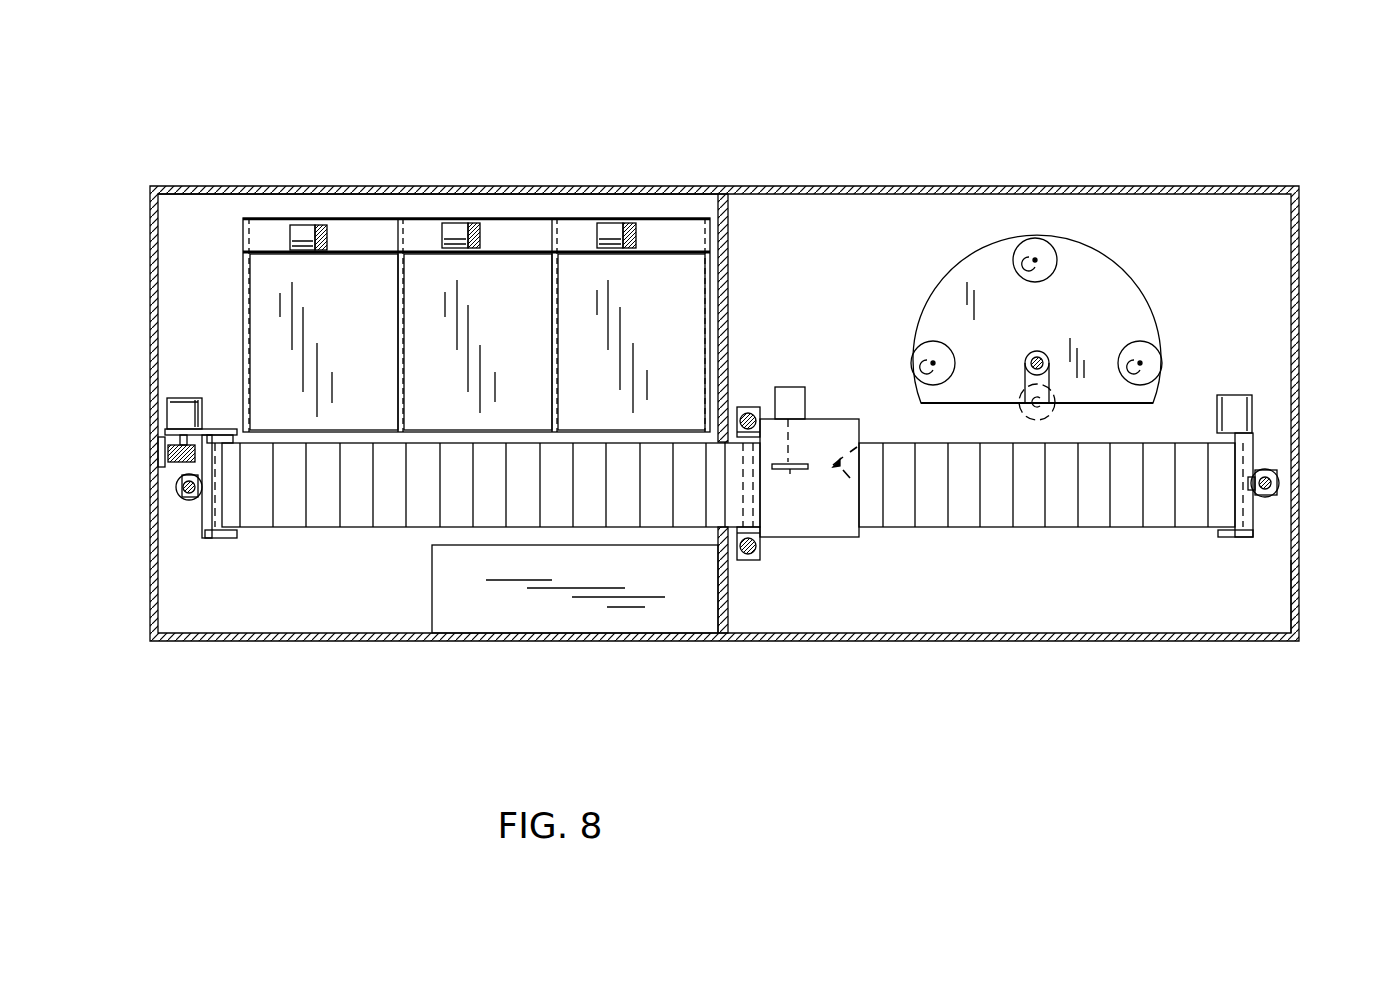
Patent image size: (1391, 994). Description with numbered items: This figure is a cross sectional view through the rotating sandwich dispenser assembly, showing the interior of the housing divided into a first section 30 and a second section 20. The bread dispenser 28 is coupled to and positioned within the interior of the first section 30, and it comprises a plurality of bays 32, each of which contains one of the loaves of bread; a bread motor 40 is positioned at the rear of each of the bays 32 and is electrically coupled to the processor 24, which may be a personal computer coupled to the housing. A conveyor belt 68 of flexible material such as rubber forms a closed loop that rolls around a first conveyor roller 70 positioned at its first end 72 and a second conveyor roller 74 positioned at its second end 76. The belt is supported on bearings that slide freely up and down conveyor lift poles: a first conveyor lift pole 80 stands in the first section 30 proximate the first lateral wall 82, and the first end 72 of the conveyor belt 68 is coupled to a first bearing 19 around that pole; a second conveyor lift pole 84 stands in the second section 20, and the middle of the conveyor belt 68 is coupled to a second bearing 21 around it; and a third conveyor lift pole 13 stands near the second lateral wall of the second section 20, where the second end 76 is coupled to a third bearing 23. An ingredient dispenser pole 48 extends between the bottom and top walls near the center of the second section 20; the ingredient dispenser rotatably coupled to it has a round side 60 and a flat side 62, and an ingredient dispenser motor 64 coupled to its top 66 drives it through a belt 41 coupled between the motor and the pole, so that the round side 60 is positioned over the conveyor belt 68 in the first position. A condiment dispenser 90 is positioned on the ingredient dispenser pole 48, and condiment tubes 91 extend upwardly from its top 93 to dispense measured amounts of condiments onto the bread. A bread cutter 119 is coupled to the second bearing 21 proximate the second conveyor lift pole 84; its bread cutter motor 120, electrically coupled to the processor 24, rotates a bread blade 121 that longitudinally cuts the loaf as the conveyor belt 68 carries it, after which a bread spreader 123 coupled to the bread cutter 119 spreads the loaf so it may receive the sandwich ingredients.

The third conveyor lift pole 13 is at (1280, 483).
The first bearing 19 is at (176, 483).
The second section 20 is at (1032, 147).
The second bearing 21 is at (770, 415).
The third bearing 23 is at (1268, 498).
The processor 24 is at (432, 598).
The bread dispenser 28 is at (248, 186).
The first section 30 is at (396, 155).
The bays 32 is at (357, 272).
The bread motor 40 is at (300, 226).
The belt 41 is at (1342, 386).
The ingredient dispenser pole 48 is at (1037, 350).
The round side 60 is at (1098, 218).
The flat side 62 is at (1128, 436).
The ingredient dispenser motor 64 is at (1020, 418).
The top 66 is at (973, 253).
The conveyor belt 68 is at (836, 418).
The first conveyor roller 70 is at (222, 485).
The first end 72 is at (218, 568).
The second conveyor roller 74 is at (1232, 482).
The second end 76 is at (1240, 568).
The first conveyor lift pole 80 is at (178, 487).
The first lateral wall 82 is at (163, 320).
The second conveyor lift pole 84 is at (744, 406).
The condiment dispenser 90 is at (1345, 317).
The condiment tube 91 is at (928, 345).
The top 93 is at (994, 258).
The bread cutter 119 is at (884, 565).
The bread cutter motor 120 is at (808, 386).
The bread blade 121 is at (790, 474).
The bread spreader 123 is at (836, 480).